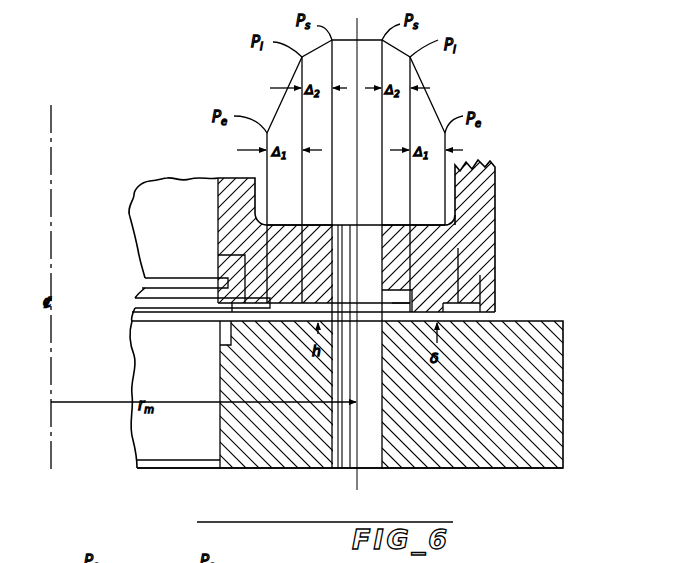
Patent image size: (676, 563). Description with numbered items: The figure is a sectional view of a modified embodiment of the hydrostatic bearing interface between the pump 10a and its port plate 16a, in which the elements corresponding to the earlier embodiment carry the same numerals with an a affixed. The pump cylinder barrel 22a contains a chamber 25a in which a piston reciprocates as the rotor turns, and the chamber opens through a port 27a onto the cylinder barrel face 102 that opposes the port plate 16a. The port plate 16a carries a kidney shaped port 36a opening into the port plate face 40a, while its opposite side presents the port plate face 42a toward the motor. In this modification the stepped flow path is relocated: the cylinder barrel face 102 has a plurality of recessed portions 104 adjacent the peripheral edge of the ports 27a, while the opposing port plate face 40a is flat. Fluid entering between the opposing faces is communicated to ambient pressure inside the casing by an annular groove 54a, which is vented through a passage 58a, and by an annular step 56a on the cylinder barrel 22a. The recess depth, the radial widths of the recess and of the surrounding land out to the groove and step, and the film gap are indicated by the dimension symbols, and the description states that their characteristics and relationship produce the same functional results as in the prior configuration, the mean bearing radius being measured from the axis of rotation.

The pump 10a is at (498, 215).
The port plate 16a is at (563, 365).
The cylinder barrel 22a is at (497, 188).
The chamber 25a is at (455, 182).
The port 27a is at (371, 224).
The kidney shaped port 36a is at (371, 458).
The port plate face 40a is at (528, 318).
The port plate face 42a is at (499, 471).
The annular groove 54a is at (458, 248).
The annular step 56a is at (218, 256).
The passage 58a is at (480, 275).
The cylinder barrel face 102 is at (220, 345).
The recessed portion 104 is at (393, 303).